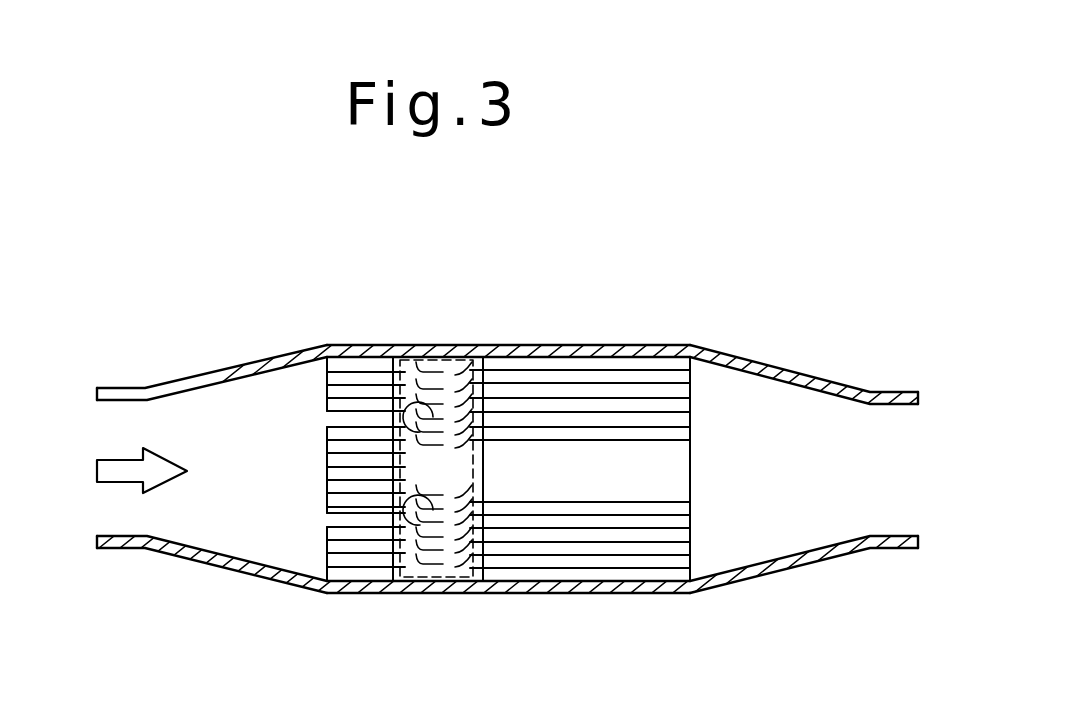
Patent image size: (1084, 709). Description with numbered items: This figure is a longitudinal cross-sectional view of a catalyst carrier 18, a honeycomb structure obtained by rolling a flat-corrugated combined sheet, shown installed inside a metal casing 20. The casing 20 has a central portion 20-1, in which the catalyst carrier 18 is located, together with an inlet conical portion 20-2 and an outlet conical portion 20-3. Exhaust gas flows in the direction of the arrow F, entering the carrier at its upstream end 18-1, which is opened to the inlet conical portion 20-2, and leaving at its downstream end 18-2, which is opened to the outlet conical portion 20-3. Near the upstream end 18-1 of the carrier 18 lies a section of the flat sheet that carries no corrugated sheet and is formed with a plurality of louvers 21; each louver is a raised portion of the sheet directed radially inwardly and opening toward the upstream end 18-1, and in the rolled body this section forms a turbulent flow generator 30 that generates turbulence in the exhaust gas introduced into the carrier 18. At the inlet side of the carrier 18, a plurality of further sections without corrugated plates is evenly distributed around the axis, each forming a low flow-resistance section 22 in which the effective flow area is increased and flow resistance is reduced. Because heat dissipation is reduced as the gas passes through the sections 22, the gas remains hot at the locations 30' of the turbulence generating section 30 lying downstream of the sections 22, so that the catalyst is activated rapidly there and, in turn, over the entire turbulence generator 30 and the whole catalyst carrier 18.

The catalyst carrier 18 is at (497, 478).
The upstream end 18-1 is at (314, 481).
The downstream end 18-2 is at (702, 477).
The metal casing 20 is at (542, 395).
The central portion 20-1 is at (548, 345).
The inlet conical portion 20-2 is at (243, 365).
The outlet conical portion 20-3 is at (755, 414).
The louvers 21 is at (461, 356).
The low flow-resistance section 22 is at (333, 417).
The turbulent flow generator 30 is at (444, 517).
The locations of the turbulence generating section 30' is at (425, 474).
The arrow indicating exhaust gas flow direction F is at (108, 473).